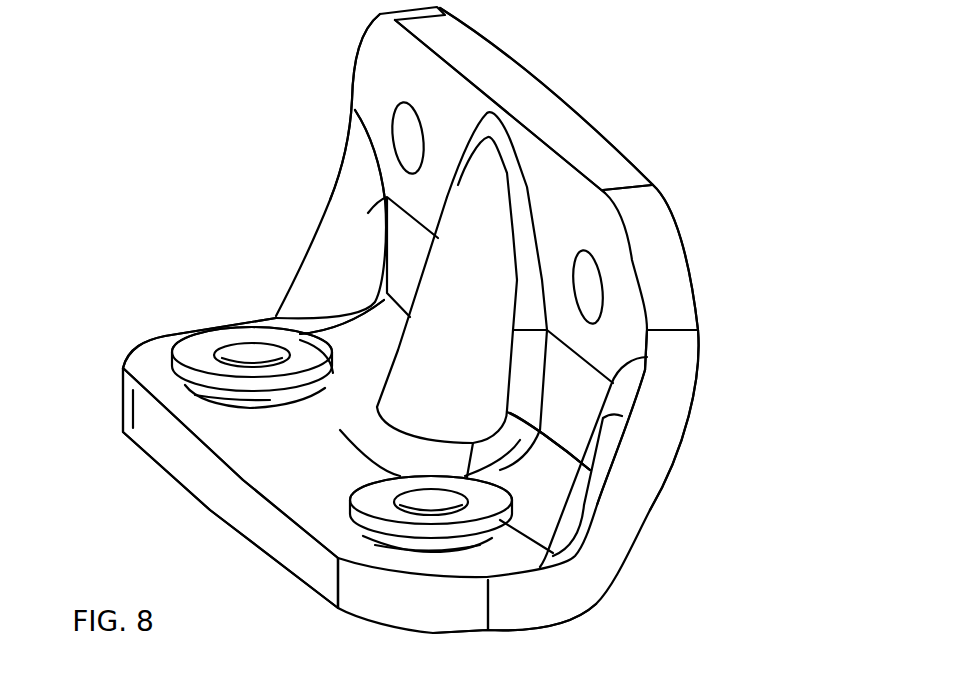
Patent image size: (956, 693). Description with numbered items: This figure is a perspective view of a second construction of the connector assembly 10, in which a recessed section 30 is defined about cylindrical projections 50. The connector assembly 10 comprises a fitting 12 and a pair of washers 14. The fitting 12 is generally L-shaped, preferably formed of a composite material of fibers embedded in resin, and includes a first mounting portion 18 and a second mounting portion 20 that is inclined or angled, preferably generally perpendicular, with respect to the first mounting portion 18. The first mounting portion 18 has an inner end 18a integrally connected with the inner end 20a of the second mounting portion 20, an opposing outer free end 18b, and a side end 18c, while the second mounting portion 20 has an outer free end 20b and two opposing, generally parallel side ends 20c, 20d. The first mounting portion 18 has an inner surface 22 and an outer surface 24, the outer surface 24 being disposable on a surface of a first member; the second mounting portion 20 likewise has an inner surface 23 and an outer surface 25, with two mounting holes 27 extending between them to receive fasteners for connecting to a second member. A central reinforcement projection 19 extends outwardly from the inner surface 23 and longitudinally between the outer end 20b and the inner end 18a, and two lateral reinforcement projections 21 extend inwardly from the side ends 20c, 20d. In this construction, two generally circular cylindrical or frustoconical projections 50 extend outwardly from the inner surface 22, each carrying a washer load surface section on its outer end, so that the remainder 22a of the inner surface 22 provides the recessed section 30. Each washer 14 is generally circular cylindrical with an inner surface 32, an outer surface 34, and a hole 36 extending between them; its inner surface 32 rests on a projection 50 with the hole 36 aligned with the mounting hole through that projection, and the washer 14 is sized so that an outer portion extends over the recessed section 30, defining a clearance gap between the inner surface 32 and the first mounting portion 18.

The connector assembly 10 is at (148, 183).
The fitting 12 is at (308, 190).
The washer 14 is at (210, 330).
The first mounting portion 18 is at (115, 447).
The inner end of first mounting portion 18a is at (550, 445).
The outer free end of first mounting portion 18b is at (200, 475).
The side end of first mounting portion 18c is at (515, 610).
The central reinforcement projection 19 is at (495, 170).
The second mounting portion 20 is at (706, 265).
The inner end of second mounting portion 20a is at (363, 383).
The outer free end of second mounting portion 20b is at (568, 128).
The side end of second mounting portion 20c is at (658, 453).
The side end of second mounting portion 20d is at (350, 82).
The lateral reinforcement projection 21 is at (335, 238).
The inner surface of first mounting portion 22 is at (158, 340).
The remainder of inner surface 22a is at (280, 484).
The inner surface of second mounting portion 23 is at (590, 195).
The outer surface of first mounting portion 24 is at (310, 584).
The outer surface of second mounting portion 25 is at (700, 361).
The mounting hole 27 is at (415, 130).
The recessed section 30 is at (342, 366).
The inner surface of washer 32 is at (200, 392).
The outer surface of washer 34 is at (245, 335).
The washer hole 36 is at (288, 348).
The cylindrical projection 50 is at (228, 398).